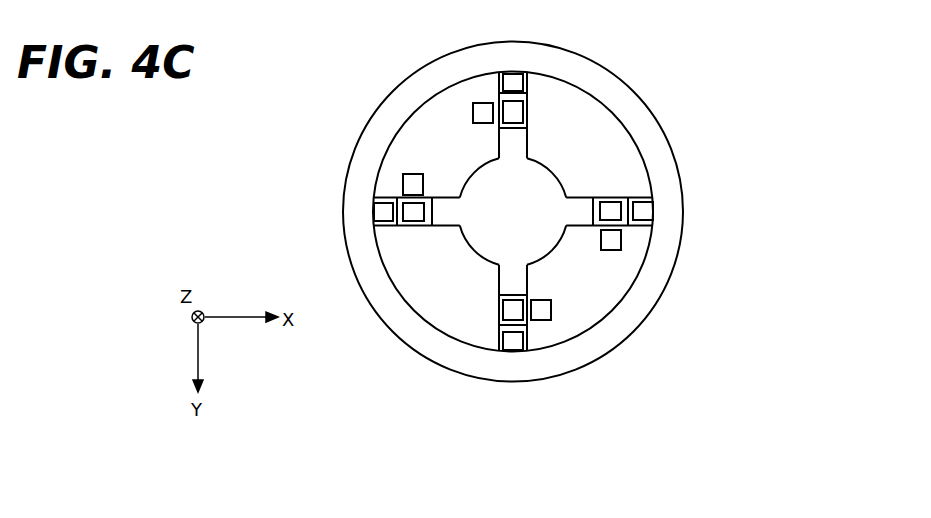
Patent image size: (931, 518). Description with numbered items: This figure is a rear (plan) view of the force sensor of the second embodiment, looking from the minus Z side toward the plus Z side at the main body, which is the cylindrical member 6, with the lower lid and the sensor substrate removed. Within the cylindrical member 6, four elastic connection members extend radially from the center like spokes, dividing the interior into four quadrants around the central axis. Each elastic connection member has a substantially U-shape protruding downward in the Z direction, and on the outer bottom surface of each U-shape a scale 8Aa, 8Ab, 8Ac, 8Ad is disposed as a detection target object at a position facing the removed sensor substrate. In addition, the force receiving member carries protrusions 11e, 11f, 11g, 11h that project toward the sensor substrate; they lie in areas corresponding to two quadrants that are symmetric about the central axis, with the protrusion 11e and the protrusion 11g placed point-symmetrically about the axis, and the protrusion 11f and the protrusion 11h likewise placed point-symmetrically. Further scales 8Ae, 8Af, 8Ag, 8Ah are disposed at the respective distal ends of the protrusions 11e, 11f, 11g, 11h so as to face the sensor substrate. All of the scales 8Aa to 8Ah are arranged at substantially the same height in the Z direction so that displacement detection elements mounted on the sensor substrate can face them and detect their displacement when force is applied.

The cylindrical member 6 is at (357, 210).
The scale 8Aa is at (508, 312).
The scale 8Ab is at (611, 207).
The scale 8Ac is at (512, 115).
The scale 8Ad is at (417, 224).
The scale 8Ae is at (562, 366).
The scale 8Af is at (700, 243).
The scale 8Ag is at (475, 63).
The scale 8Ah is at (315, 164).
The protrusion 11e is at (541, 313).
The protrusion 11f is at (613, 239).
The protrusion 11g is at (485, 114).
The protrusion 11h is at (410, 183).